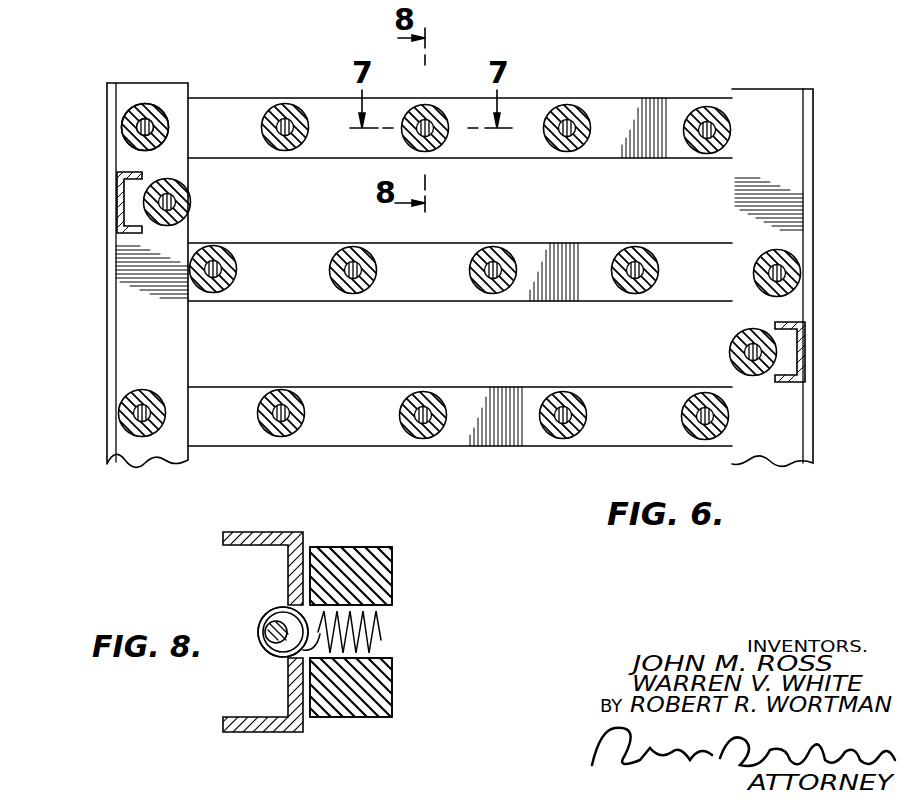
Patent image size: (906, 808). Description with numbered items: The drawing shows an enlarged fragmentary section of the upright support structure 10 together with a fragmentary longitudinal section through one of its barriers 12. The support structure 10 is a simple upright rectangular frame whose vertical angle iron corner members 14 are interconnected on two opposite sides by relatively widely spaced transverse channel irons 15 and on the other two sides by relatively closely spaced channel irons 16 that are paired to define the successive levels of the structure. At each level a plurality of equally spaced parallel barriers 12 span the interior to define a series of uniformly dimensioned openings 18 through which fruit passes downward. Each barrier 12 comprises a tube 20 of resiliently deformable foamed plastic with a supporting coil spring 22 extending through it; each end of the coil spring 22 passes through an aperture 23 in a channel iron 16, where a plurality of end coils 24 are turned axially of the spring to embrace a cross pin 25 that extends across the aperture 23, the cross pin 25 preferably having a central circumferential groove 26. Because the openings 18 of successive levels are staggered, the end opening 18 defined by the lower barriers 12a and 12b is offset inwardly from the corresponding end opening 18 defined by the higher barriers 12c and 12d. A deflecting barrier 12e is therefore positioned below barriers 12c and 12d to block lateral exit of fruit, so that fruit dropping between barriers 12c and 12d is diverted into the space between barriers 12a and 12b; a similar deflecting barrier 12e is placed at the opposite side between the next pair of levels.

In FIG. 6, the upright support structure 10 is at (107, 347).
In FIG. 6, the barrier 12 is at (423, 104).
In FIG. 8, the barrier 12 is at (393, 540).
In FIG. 6, the barrier 12a is at (228, 252).
In FIG. 6, the barrier 12b is at (360, 247).
In FIG. 6, the barrier 12c is at (153, 103).
In FIG. 6, the barrier 12d is at (282, 105).
In FIG. 6, the deflecting barrier 12e is at (187, 183).
In FIG. 6, the vertical angle iron corner member 14 is at (107, 262).
In FIG. 6, the transverse channel iron 15 is at (117, 205).
In FIG. 6, the channel iron 16 is at (663, 102).
In FIG. 8, the channel iron 16 is at (265, 532).
In FIG. 6, the opening 18 is at (228, 107).
In FIG. 6, the tube 20 is at (122, 123).
In FIG. 8, the tube 20 is at (373, 577).
In FIG. 6, the coil spring 22 is at (123, 138).
In FIG. 8, the coil spring 22 is at (380, 633).
In FIG. 8, the aperture 23 is at (282, 605).
In FIG. 8, the end coils 24 is at (268, 610).
In FIG. 8, the cross pin 25 is at (272, 632).
In FIG. 8, the central circumferential groove 26 is at (290, 652).